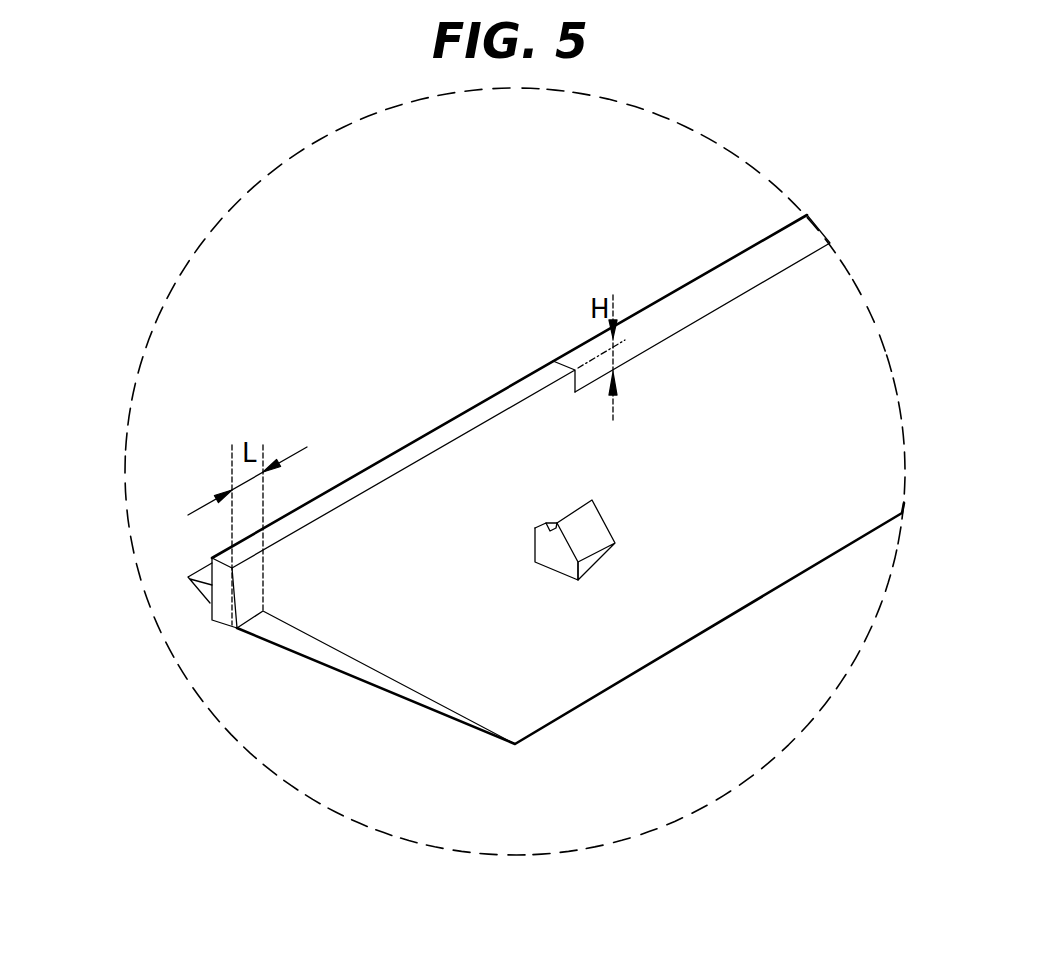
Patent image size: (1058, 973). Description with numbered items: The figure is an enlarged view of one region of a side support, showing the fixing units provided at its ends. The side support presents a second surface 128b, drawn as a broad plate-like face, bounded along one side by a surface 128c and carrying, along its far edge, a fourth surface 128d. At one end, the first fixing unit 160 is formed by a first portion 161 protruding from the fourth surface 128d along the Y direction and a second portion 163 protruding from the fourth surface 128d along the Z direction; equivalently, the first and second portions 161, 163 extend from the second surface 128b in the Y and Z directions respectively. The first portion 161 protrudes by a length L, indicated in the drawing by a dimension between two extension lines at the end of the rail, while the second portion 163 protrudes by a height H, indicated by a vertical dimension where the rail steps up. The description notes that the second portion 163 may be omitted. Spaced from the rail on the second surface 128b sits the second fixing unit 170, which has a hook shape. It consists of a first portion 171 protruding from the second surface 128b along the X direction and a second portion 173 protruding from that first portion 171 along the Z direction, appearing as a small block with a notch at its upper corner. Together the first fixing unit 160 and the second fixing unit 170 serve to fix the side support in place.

The second surface 128b is at (652, 613).
The inclined side surface 128c is at (373, 677).
The fourth surface 128d is at (680, 308).
The first fixing unit 160 is at (434, 559).
The first portion 161 is at (240, 625).
The second portion 163 is at (365, 478).
The second fixing unit 170 is at (496, 542).
The first portion 171 is at (546, 547).
The second portion 173 is at (548, 522).